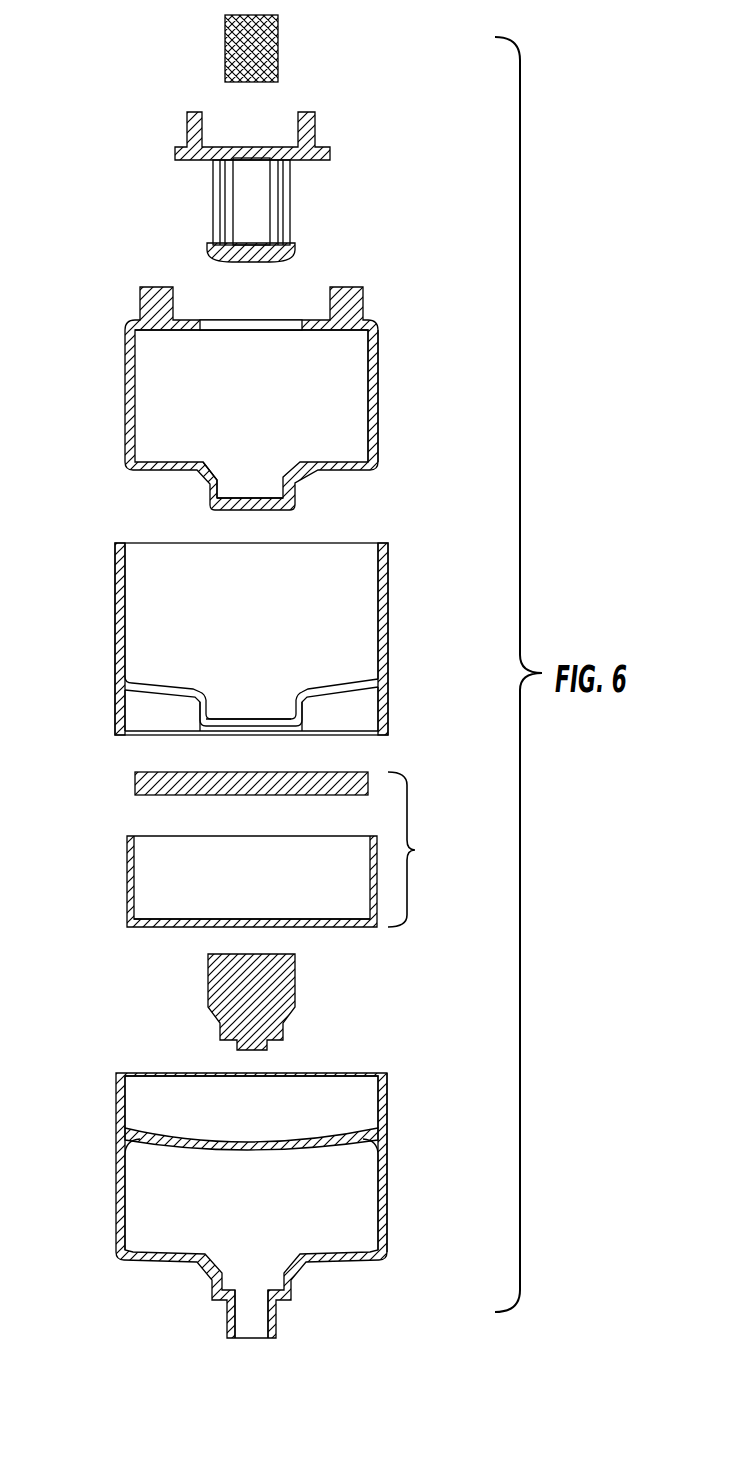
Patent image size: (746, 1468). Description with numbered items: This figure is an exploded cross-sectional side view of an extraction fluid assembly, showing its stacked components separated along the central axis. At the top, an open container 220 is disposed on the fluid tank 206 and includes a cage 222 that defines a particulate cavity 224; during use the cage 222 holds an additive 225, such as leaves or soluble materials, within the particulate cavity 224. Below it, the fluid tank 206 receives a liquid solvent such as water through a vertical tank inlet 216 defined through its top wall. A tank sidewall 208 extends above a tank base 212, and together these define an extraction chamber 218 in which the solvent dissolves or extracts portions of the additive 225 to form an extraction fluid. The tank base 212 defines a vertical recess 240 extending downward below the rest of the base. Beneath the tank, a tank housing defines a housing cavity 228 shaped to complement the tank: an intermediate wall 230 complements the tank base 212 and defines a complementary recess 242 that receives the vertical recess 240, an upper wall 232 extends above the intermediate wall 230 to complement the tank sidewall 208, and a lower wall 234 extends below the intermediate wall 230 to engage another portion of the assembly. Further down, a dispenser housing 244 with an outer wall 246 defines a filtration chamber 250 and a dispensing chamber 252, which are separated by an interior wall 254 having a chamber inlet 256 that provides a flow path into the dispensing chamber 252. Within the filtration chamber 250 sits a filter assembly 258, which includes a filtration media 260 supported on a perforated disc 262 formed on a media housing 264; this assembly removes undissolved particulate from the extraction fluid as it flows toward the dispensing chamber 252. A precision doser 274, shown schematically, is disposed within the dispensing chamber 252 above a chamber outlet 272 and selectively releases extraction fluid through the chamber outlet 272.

The fluid tank 206 is at (125, 388).
The tank sidewall 208 is at (378, 392).
The tank base 212 is at (163, 468).
The vertical tank inlet 216 is at (291, 322).
The extraction chamber 218 is at (270, 421).
The open container 220 is at (325, 155).
The cage 222 is at (208, 250).
The particulate cavity 224 is at (273, 214).
The additive 225 is at (278, 50).
The housing cavity 228 is at (269, 631).
The intermediate wall 230 is at (150, 690).
The upper wall 232 is at (388, 617).
The lower wall 234 is at (388, 720).
The vertical recess 240 is at (277, 482).
The complementary recess 242 is at (282, 705).
The dispenser housing 244 is at (116, 1140).
The outer wall 246 is at (387, 1190).
The filtration chamber 250 is at (205, 1119).
The dispensing chamber 252 is at (322, 1231).
The interior wall 254 is at (305, 1130).
The chamber inlet 256 is at (242, 1144).
The filter assembly 258 is at (421, 849).
The filtration media 260 is at (135, 780).
The perforated disc 262 is at (165, 927).
The media housing 264 is at (127, 890).
The chamber outlet 272 is at (246, 1341).
The precision doser 274 is at (295, 995).